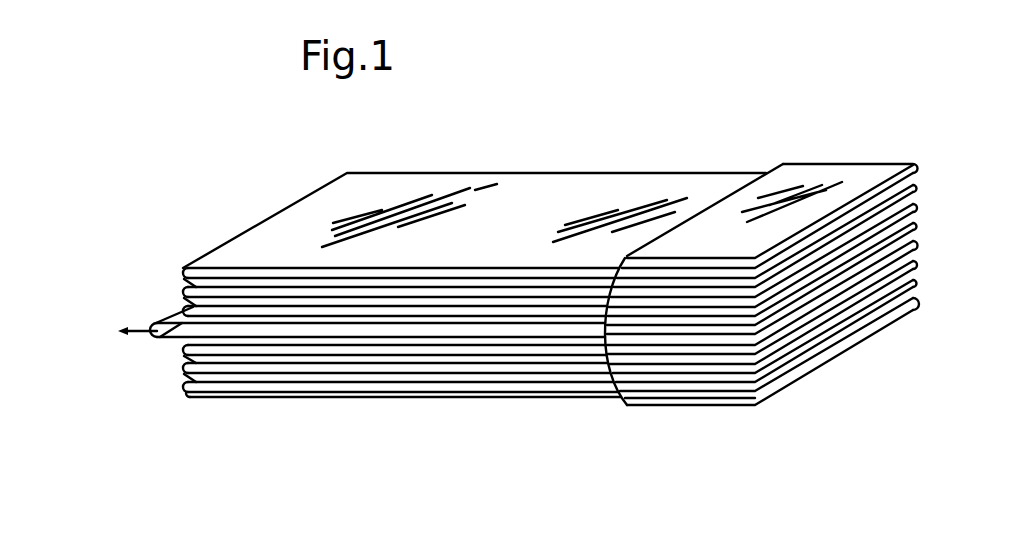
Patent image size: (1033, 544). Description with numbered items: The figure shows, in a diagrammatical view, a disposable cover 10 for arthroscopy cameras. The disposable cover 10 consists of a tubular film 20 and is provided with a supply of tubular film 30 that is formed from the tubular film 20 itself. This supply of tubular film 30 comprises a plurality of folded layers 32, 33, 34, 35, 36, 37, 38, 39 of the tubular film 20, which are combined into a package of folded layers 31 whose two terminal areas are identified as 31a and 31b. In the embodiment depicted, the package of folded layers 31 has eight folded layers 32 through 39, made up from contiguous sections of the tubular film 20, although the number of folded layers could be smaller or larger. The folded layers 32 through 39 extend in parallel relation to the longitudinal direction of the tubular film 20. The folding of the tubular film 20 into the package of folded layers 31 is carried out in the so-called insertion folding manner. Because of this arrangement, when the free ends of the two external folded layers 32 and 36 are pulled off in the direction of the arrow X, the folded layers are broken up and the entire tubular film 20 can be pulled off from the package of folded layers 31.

The disposable cover 10 is at (469, 159).
The tubular film 20 is at (508, 186).
The supply of tubular film 30 is at (402, 404).
The package of folded layers 31 is at (528, 366).
The terminal area of the package of folded layers 31a is at (198, 399).
The terminal area of the package of folded layers 31b is at (728, 408).
The folded layer 32 is at (770, 399).
The folded layer 33 is at (797, 358).
The folded layer 34 is at (828, 322).
The folded layer 35 is at (858, 281).
The folded layer 36 is at (798, 232).
The folded layer 37 is at (822, 243).
The folded layer 38 is at (852, 246).
The folded layer 39 is at (878, 248).